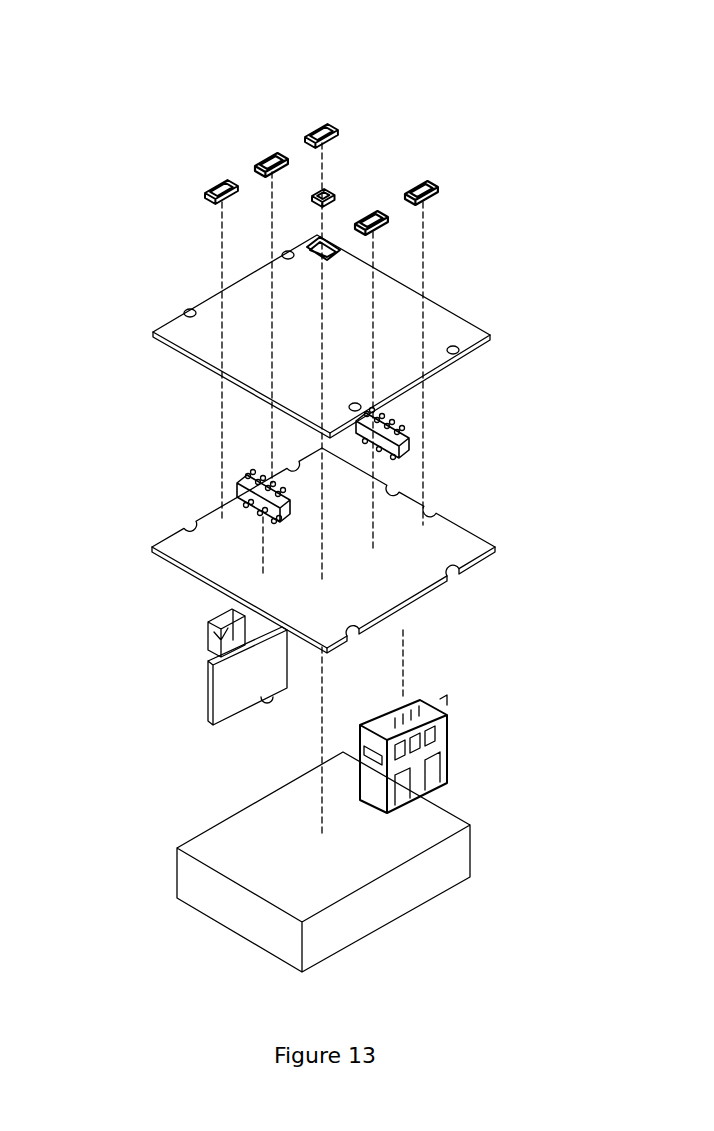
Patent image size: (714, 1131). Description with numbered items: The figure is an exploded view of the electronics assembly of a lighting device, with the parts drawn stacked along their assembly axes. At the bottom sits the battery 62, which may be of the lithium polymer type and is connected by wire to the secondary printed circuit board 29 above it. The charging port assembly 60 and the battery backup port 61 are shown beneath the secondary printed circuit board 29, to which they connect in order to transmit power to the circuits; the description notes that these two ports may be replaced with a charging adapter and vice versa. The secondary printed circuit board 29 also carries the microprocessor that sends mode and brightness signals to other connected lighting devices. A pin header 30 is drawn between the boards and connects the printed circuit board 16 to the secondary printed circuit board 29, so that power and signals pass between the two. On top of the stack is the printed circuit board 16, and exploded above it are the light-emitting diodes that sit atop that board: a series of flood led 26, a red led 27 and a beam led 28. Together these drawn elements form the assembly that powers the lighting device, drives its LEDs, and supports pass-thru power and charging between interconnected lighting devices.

The printed circuit board 16 is at (170, 318).
The flood led 26 is at (208, 192).
The red led 27 is at (258, 152).
The beam led 28 is at (333, 191).
The secondary printed circuit board 29 is at (152, 547).
The pin header 30 is at (238, 497).
The charging port assembly 60 is at (213, 640).
The battery backup port 61 is at (447, 738).
The battery 62 is at (177, 848).